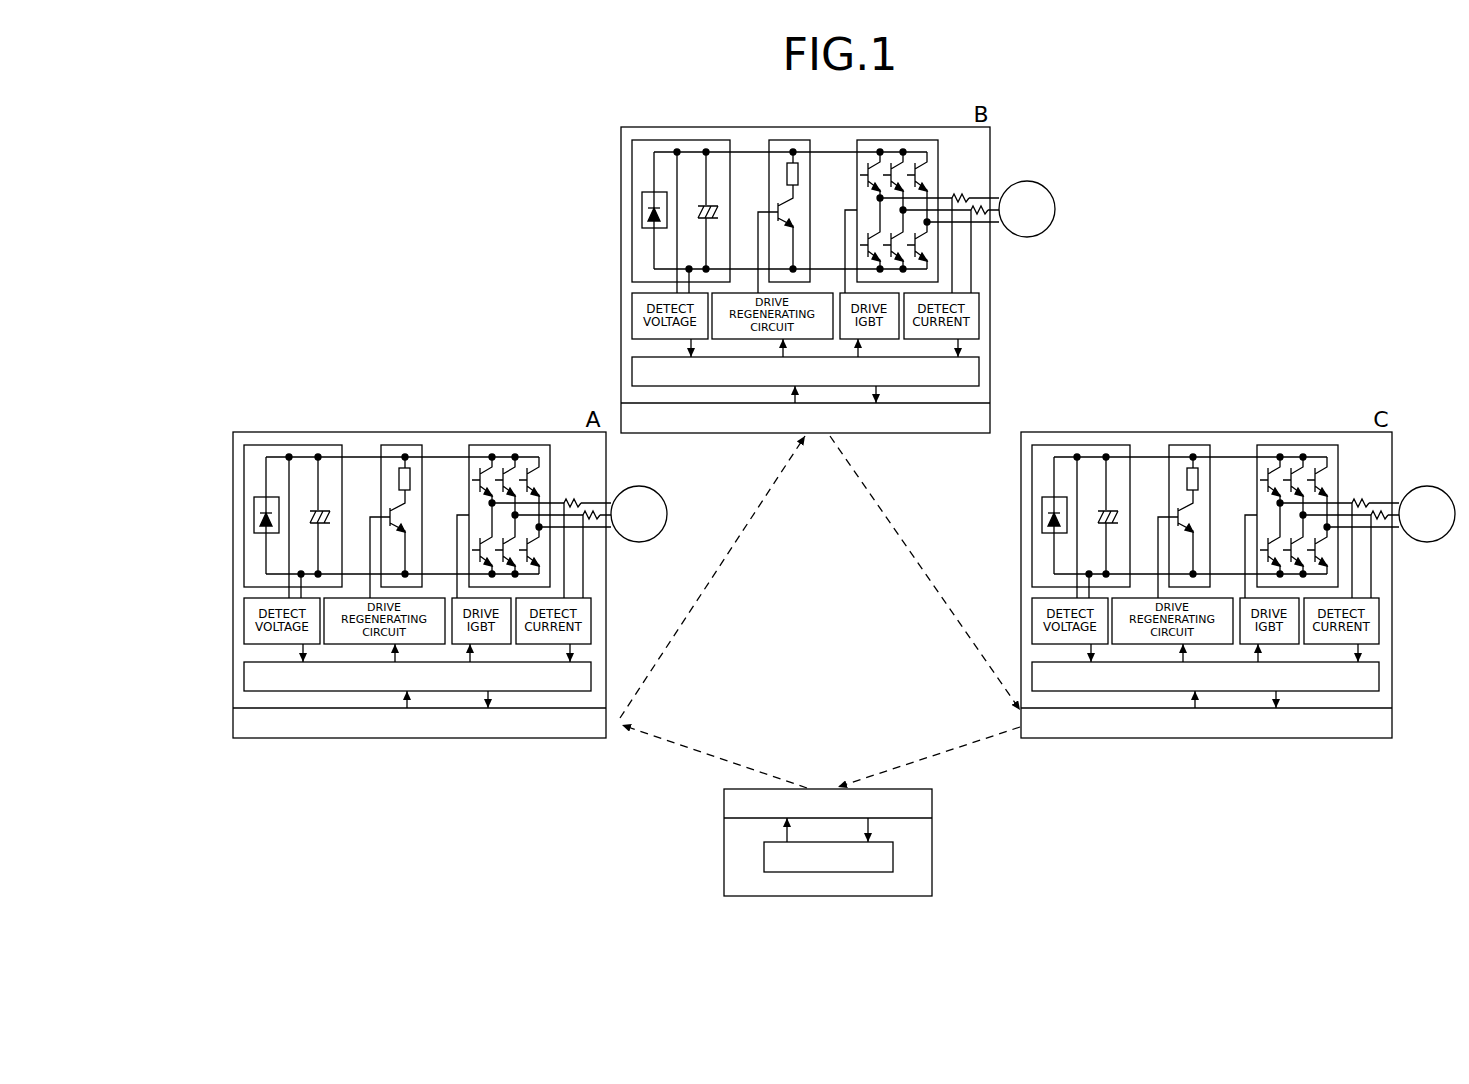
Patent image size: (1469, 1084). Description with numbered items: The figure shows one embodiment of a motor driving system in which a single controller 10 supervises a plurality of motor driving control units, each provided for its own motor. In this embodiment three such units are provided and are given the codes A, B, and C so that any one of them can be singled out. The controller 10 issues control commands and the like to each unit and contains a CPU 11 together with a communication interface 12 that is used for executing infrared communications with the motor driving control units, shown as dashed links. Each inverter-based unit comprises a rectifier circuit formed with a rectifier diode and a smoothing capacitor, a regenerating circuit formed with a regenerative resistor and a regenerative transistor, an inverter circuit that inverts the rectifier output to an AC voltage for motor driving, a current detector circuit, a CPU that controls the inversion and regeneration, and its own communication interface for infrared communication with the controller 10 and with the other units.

The controller 10 is at (940, 851).
The CPU 11 is at (893, 862).
The communication interface 12 is at (932, 801).